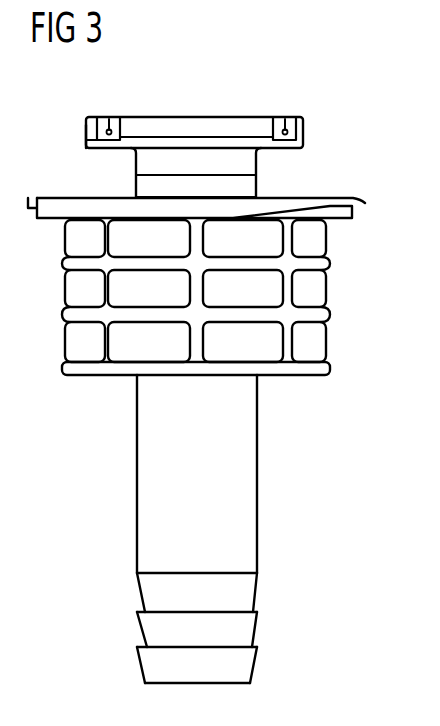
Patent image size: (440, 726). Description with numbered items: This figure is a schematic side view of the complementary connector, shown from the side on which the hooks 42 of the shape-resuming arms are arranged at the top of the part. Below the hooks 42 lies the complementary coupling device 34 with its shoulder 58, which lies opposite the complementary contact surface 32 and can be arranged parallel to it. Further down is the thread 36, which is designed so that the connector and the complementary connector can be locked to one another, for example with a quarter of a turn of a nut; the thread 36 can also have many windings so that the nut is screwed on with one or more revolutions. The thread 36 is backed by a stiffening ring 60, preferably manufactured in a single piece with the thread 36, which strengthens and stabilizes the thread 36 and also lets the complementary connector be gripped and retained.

The complementary contact surface 32 is at (231, 116).
The complementary coupling device 34 is at (86, 133).
The thread 36 is at (358, 199).
The hooks 42 is at (108, 118).
The shoulder 58 is at (97, 149).
The stiffening ring 60 is at (322, 312).